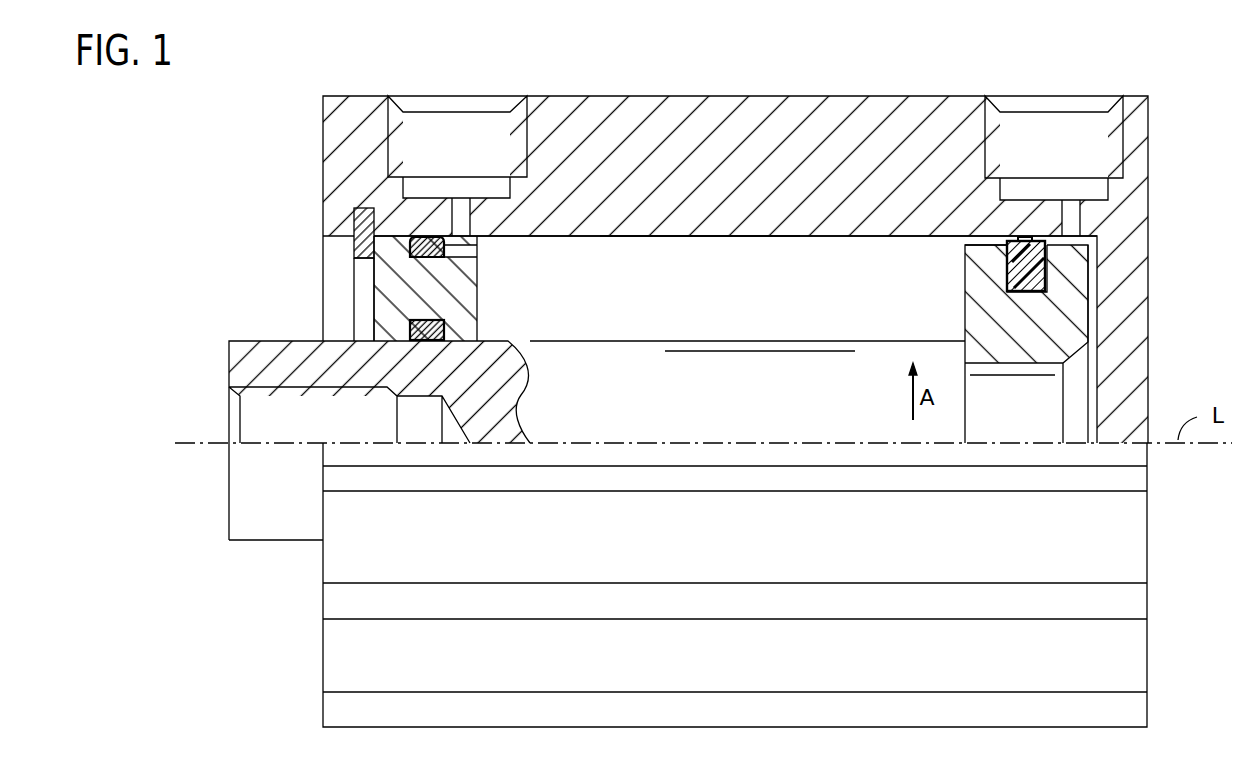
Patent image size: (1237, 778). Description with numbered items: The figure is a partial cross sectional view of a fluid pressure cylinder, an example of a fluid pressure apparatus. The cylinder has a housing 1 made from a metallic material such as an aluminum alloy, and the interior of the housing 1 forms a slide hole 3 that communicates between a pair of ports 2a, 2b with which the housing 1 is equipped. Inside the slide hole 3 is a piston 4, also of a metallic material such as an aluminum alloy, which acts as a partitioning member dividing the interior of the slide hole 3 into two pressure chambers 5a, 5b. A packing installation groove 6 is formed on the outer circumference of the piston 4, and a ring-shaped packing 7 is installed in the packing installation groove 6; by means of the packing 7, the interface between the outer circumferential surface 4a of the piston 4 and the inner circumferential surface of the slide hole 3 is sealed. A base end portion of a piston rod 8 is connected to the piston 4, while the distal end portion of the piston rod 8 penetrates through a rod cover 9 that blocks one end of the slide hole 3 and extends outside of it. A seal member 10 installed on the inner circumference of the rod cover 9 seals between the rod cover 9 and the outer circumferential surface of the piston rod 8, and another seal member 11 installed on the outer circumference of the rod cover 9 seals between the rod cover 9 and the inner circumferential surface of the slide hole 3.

The housing 1 is at (621, 112).
The port 2a is at (1051, 125).
The port 2b is at (445, 120).
The slide hole 3 is at (614, 238).
The piston 4 is at (980, 315).
The outer circumferential surface of the piston 4a is at (987, 245).
The pressure chamber 5a is at (1091, 287).
The pressure chamber 5b is at (682, 275).
The packing installation groove 6 is at (1025, 283).
The packing 7 is at (1006, 261).
The piston rod 8 is at (245, 356).
The rod cover 9 is at (390, 277).
The seal member 10 is at (445, 329).
The seal member 11 is at (445, 253).